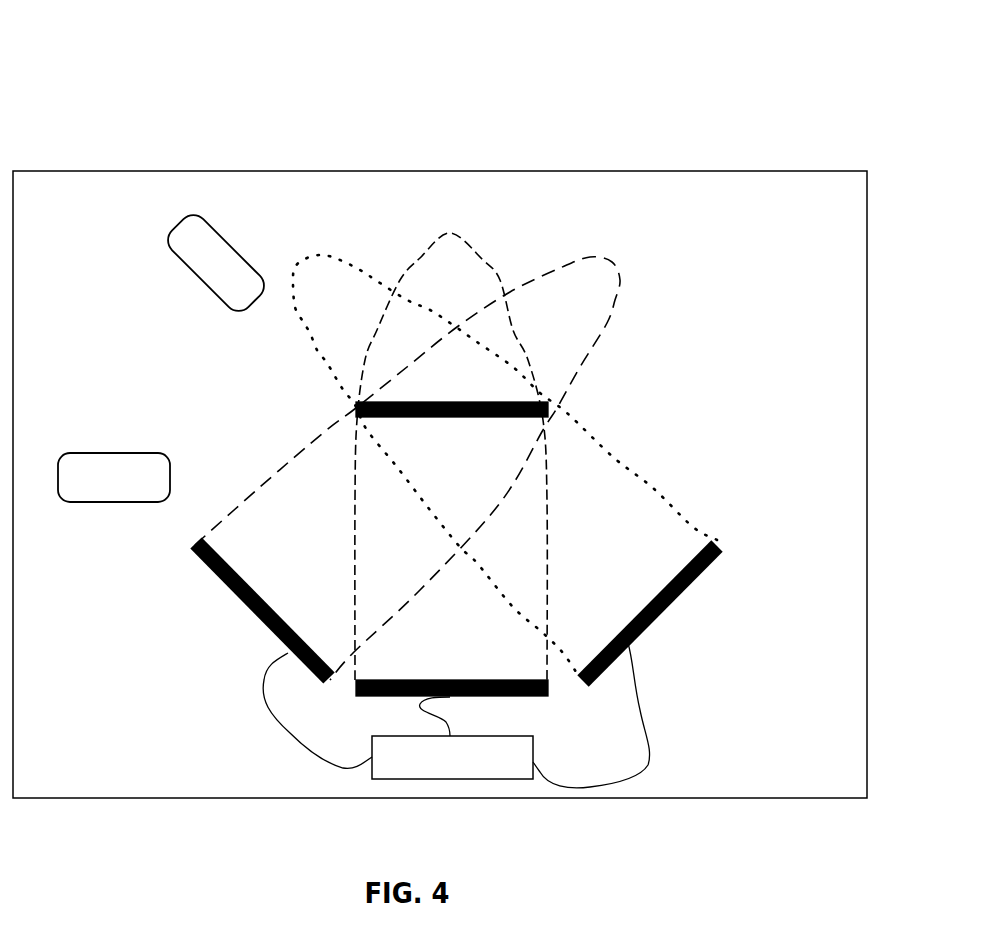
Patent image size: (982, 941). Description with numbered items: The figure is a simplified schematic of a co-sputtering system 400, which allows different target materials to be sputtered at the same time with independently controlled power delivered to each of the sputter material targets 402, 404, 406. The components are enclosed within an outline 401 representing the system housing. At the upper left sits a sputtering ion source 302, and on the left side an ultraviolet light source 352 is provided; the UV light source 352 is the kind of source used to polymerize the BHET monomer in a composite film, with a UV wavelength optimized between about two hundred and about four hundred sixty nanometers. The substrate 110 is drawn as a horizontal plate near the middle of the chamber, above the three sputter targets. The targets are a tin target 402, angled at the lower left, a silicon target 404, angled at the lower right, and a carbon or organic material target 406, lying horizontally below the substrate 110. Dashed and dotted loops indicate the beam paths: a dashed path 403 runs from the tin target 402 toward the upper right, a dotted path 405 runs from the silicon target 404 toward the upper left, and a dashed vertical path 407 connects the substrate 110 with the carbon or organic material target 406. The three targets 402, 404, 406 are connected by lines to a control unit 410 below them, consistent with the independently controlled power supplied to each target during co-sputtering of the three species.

The co-sputtering system 400 is at (128, 100).
The chamber 401 is at (381, 171).
The sputtering ion source 302 is at (233, 250).
The ultraviolet (UV) light source 352 is at (74, 453).
The substrate 110 is at (356, 410).
The ion beam path 403 is at (250, 497).
The UV beam path 405 is at (658, 496).
The vertical beam path 407 is at (548, 483).
The tin target 402 is at (246, 602).
The silicon target 404 is at (666, 604).
The carbon or organic material target 406 is at (535, 697).
The controller 410 is at (455, 779).